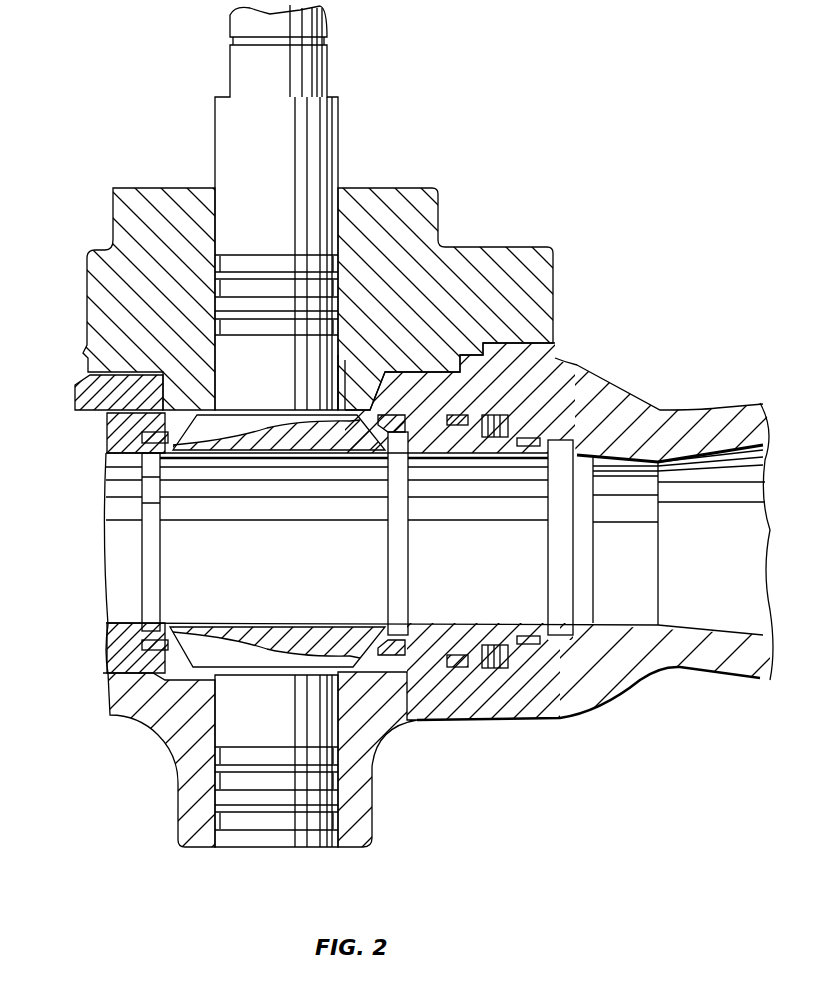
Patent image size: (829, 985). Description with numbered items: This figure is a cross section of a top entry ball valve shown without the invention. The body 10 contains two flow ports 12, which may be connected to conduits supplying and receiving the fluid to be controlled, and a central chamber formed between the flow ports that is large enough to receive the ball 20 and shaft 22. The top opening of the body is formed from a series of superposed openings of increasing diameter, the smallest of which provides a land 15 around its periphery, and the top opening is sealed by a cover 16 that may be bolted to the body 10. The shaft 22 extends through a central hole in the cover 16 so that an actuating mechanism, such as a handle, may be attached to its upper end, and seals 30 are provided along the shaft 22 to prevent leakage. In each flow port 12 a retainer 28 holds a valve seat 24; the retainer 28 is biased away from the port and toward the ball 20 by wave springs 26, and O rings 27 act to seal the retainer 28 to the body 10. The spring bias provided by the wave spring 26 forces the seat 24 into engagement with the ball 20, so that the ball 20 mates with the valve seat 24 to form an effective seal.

The body 10 is at (381, 766).
The flow port 12 is at (743, 620).
The land 15 is at (417, 369).
The cover 16 is at (447, 246).
The ball 20 is at (136, 423).
The shaft 22 is at (214, 128).
The valve seat 24 is at (382, 420).
The wave spring 26 is at (557, 359).
The O ring 27 is at (556, 346).
The retainer 28 is at (472, 668).
The seal 30 is at (214, 272).